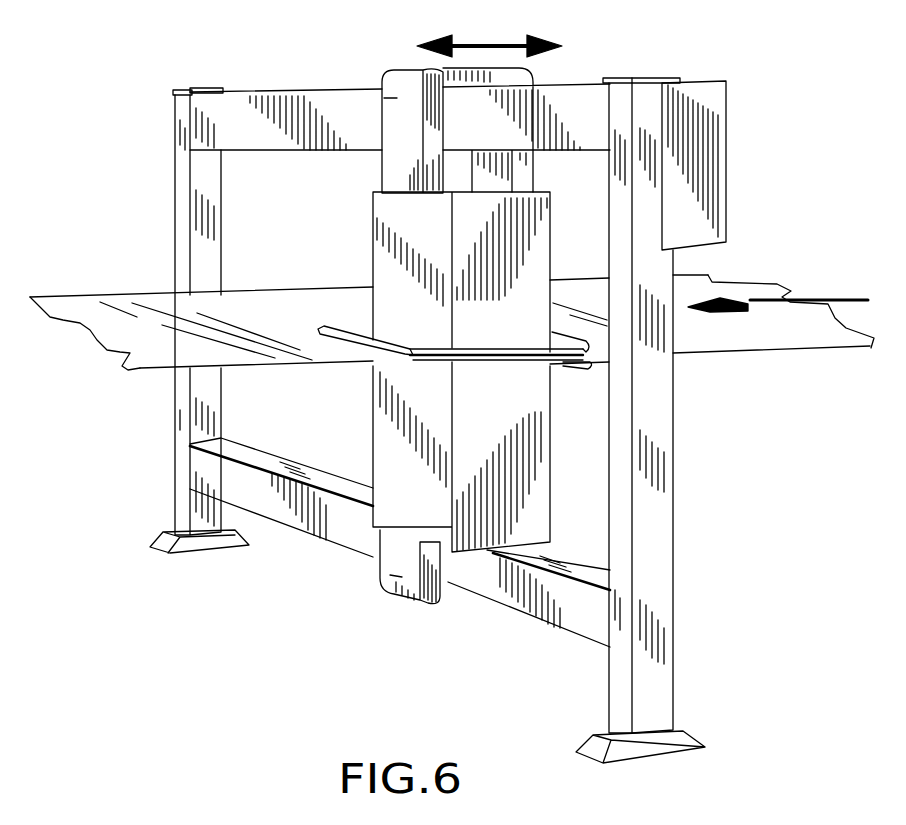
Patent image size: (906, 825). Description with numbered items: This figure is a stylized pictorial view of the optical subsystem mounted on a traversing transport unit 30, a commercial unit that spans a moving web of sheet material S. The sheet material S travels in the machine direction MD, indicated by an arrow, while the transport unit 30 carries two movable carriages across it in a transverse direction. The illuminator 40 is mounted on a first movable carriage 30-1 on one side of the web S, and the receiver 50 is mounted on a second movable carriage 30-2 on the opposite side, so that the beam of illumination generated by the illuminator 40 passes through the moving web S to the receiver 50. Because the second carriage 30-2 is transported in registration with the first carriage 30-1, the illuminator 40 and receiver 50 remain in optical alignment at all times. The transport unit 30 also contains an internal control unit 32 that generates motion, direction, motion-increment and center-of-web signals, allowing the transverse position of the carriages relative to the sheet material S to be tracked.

The transport unit 30 is at (597, 103).
The first movable carriage 30-1 is at (412, 70).
The second movable carriage 30-2 is at (427, 603).
The internal control unit 32 is at (727, 145).
The illuminator 40 is at (372, 217).
The receiver 50 is at (373, 407).
The sheet material S is at (731, 288).
The machine direction MD is at (757, 306).